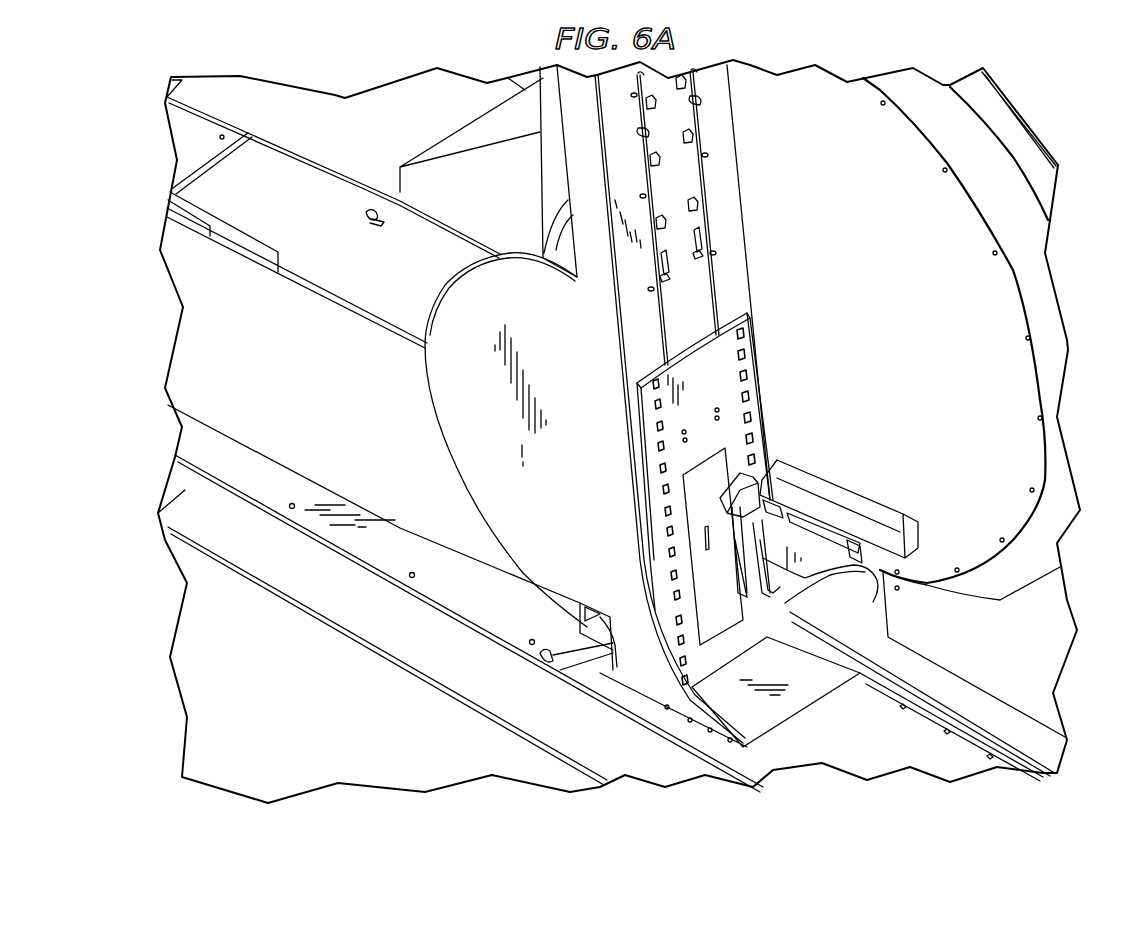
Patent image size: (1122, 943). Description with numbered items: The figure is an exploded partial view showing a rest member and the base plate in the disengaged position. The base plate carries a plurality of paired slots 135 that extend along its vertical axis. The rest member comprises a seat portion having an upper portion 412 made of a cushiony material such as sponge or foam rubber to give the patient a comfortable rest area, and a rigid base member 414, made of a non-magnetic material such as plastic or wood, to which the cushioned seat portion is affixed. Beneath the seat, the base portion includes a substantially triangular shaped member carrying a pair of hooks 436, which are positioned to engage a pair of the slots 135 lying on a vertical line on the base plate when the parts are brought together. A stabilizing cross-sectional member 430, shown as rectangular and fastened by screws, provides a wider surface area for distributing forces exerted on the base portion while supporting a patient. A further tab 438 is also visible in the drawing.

The paired slots 135 is at (666, 552).
The upper portion 412 is at (840, 498).
The rigid base member 414 is at (890, 570).
The stabilizing cross-sectional member 430 is at (763, 560).
The hooks 436 is at (770, 596).
The retaining tab 438 is at (757, 500).